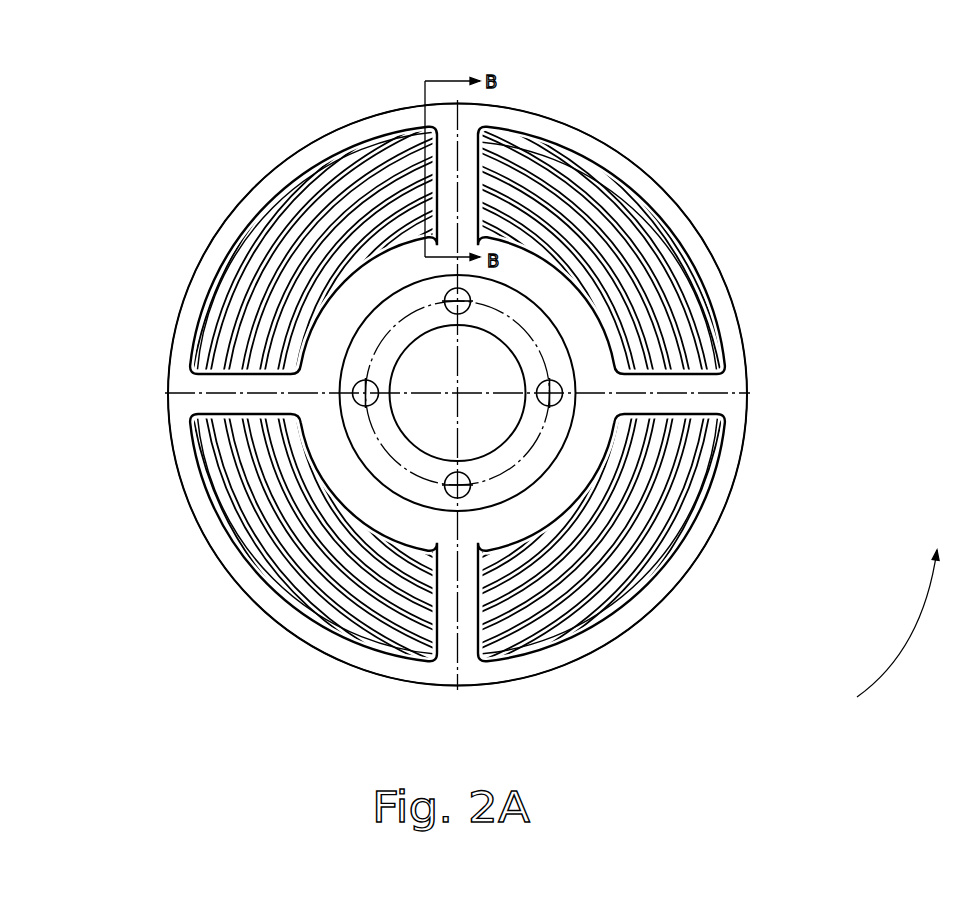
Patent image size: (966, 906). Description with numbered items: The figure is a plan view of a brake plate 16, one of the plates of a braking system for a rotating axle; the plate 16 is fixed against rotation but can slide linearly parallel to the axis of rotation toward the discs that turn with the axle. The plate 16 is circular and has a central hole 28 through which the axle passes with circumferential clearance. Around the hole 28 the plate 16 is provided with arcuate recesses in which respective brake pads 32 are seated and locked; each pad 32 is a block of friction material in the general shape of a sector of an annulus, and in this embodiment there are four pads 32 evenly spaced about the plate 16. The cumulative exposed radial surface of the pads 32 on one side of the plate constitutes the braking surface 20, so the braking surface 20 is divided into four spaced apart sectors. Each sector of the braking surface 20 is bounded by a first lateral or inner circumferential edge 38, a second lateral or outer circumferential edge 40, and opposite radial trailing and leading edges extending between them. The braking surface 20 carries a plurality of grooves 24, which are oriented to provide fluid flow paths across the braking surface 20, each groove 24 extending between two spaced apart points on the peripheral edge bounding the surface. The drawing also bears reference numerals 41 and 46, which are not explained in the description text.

The plate 16 is at (632, 662).
The braking surface 20 is at (327, 200).
The grooves 24 is at (513, 200).
The central hole 28 is at (522, 428).
The brake pads 32 is at (722, 287).
The first lateral edge 38 is at (429, 347).
The second lateral edge 40 is at (367, 130).
The louver 41 is at (240, 357).
The direction of rotation 46 is at (873, 639).